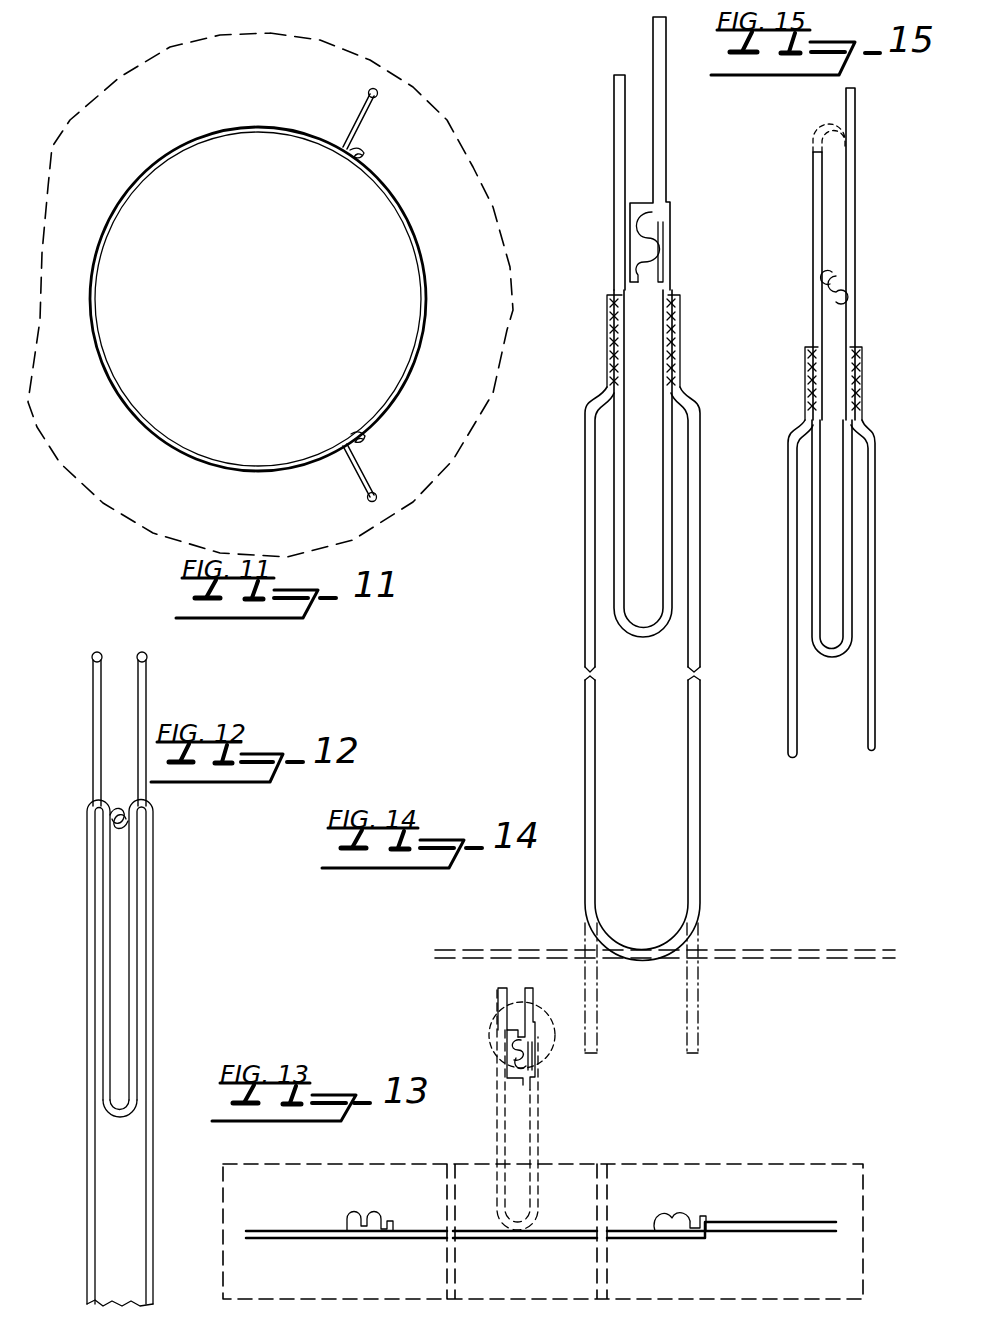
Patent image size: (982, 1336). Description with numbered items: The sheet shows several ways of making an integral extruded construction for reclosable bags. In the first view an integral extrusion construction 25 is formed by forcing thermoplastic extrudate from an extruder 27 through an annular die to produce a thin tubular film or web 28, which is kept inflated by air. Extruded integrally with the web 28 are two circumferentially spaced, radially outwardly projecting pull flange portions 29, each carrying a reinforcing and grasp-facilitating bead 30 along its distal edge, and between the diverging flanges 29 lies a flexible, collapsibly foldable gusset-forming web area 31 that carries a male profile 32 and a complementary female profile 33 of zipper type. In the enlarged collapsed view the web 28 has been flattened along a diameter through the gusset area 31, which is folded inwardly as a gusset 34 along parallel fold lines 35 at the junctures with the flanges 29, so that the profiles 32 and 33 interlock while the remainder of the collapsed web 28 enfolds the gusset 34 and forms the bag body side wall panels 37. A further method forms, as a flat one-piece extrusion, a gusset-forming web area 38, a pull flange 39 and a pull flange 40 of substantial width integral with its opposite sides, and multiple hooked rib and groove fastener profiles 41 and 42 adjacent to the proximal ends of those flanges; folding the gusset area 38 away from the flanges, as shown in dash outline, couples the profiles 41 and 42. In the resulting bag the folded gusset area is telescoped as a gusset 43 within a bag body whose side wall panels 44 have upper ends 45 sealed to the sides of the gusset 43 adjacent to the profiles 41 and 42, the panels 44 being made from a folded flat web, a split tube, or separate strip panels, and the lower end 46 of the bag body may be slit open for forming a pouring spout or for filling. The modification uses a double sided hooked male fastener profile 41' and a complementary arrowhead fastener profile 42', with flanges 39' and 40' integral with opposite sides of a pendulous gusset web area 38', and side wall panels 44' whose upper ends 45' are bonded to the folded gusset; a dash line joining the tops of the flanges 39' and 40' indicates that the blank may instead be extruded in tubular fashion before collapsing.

In FIG. 11, the integral extrusion construction 25 is at (168, 460).
In FIG. 12, the integral extrusion construction 25 is at (70, 929).
In FIG. 11, the extruder 27 is at (435, 104).
In FIG. 11, the tubular film or web 28 is at (172, 158).
In FIG. 11, the pull flange portions 29 is at (358, 122).
In FIG. 12, the pull flange portions 29 is at (133, 713).
In FIG. 11, the bead 30 is at (370, 89).
In FIG. 12, the bead 30 is at (143, 653).
In FIG. 11, the gusset-forming web area 31 is at (421, 262).
In FIG. 11, the male profile 32 is at (366, 154).
In FIG. 12, the male profile 32 is at (117, 806).
In FIG. 11, the female profile 33 is at (366, 440).
In FIG. 12, the female profile 33 is at (130, 832).
In FIG. 12, the gusset 34 is at (100, 1101).
In FIG. 12, the fold lines 35 is at (92, 800).
In FIG. 12, the bag body side wall panels 37 is at (89, 1016).
In FIG. 14, the gusset-forming web area 38 is at (678, 463).
In FIG. 13, the gusset-forming web area 38 is at (525, 1204).
In FIG. 14, the pull flange 39 is at (600, 182).
In FIG. 13, the pull flange 39 is at (392, 1134).
In FIG. 14, the pull flange 40 is at (677, 153).
In FIG. 13, the pull flange 40 is at (662, 1113).
In FIG. 14, the fastener profile 41 is at (617, 247).
In FIG. 13, the fastener profile 41 is at (436, 1157).
In FIG. 14, the fastener profile 42 is at (686, 247).
In FIG. 13, the fastener profile 42 is at (627, 1136).
In FIG. 14, the gusset 43 is at (599, 494).
In FIG. 13, the gusset 43 is at (664, 1161).
In FIG. 14, the side wall panels 44 is at (665, 842).
In FIG. 14, the upper ends 45 is at (650, 341).
In FIG. 14, the lower end 46 is at (641, 948).
In FIG. 15, the gusset web area 38' is at (867, 538).
In FIG. 15, the flange 39' is at (808, 272).
In FIG. 15, the flange 40' is at (879, 254).
In FIG. 15, the fastener profile 41' is at (867, 287).
In FIG. 15, the fastener profile 42' is at (864, 258).
In FIG. 15, the side wall panels 44' is at (838, 589).
In FIG. 15, the upper ends 45' is at (839, 380).